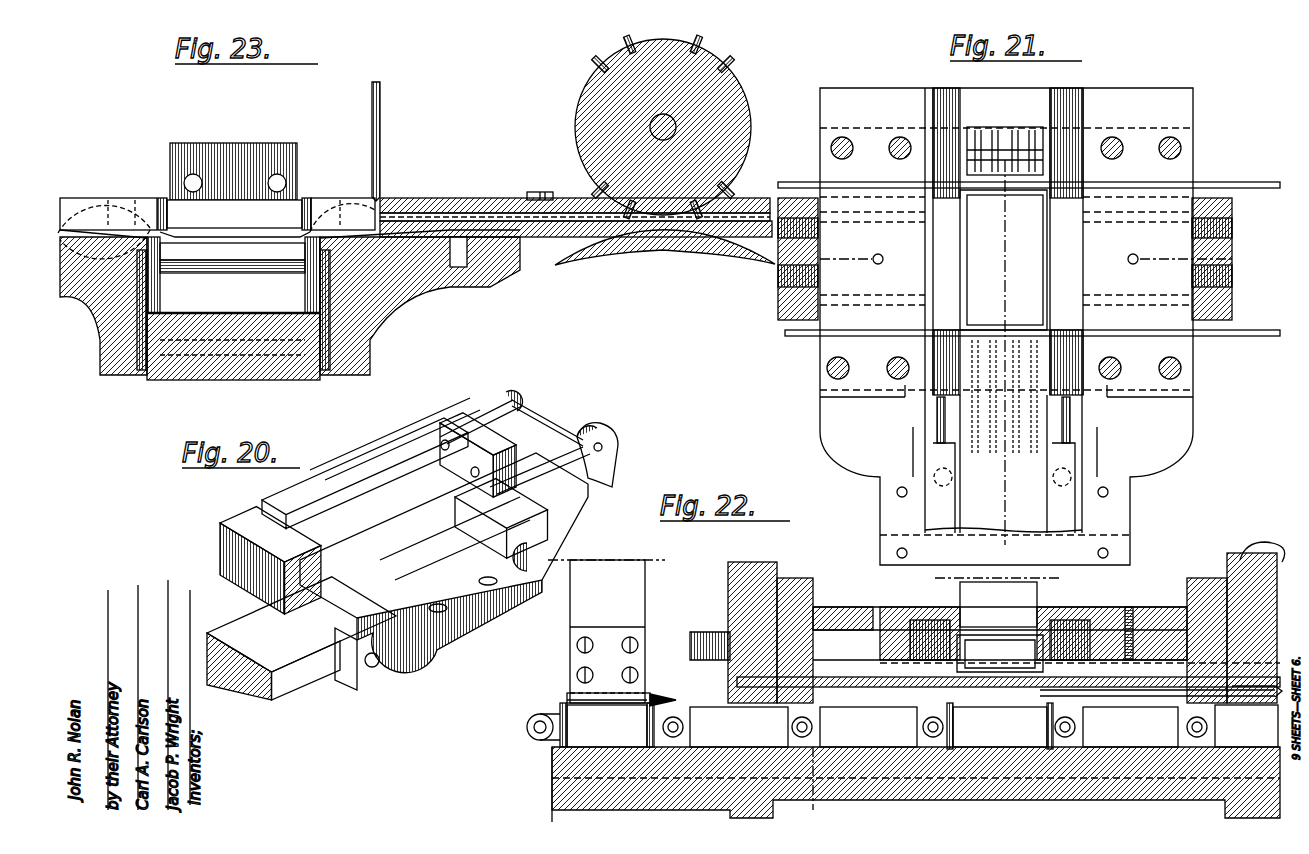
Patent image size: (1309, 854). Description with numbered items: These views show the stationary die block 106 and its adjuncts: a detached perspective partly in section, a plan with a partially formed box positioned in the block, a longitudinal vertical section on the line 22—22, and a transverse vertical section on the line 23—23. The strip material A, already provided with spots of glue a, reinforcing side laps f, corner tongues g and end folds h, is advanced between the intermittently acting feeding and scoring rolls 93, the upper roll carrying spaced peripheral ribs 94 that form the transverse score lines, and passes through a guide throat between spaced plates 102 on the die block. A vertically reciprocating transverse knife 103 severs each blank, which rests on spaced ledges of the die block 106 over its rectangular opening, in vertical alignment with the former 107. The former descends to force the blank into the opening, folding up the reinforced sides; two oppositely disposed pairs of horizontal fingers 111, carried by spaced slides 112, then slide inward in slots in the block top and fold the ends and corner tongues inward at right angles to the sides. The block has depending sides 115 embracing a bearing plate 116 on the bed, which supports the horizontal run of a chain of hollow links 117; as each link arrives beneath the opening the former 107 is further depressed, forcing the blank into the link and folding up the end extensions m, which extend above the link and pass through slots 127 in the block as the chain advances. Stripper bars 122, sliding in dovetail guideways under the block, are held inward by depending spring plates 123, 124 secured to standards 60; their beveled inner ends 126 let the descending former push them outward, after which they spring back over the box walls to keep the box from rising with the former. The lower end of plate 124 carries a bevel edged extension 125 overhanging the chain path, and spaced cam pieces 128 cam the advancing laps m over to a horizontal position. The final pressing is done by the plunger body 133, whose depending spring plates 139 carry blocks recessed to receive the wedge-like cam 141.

In FIG. 22, the standards 60 is at (770, 566).
In FIG. 23, the feeding and scoring rolls 93 is at (596, 95).
In FIG. 23, the peripheral ribs 94 is at (720, 70).
In FIG. 23, the spaced plates 102 is at (470, 226).
In FIG. 23, the transverse knife 103 is at (381, 92).
In FIG. 23, the die block 106 is at (229, 226).
In FIG. 21, the die block 106 is at (958, 240).
In FIG. 20, the die block 106 is at (386, 456).
In FIG. 22, the former 107 is at (998, 625).
In FIG. 23, the horizontal fingers 111 is at (153, 198).
In FIG. 21, the horizontal fingers 111 is at (790, 182).
In FIG. 22, the horizontal fingers 111 is at (697, 635).
In FIG. 20, the horizontal fingers 111 is at (545, 406).
In FIG. 20, the slides 112 is at (596, 428).
In FIG. 23, the depending sides 115 is at (371, 336).
In FIG. 20, the depending sides 115 is at (358, 684).
In FIG. 23, the bearing plate 116 is at (230, 373).
In FIG. 22, the bearing plate 116 is at (552, 766).
In FIG. 20, the bearing plate 116 is at (258, 690).
In FIG. 23, the chain of hollow links 117 is at (322, 300).
In FIG. 22, the chain of hollow links 117 is at (528, 731).
In FIG. 23, the stripper bars 122 is at (192, 258).
In FIG. 22, the stripper bars 122 is at (890, 695).
In FIG. 22, the spring-plate 123 is at (1255, 545).
In FIG. 22, the spring-plate 124 is at (728, 585).
In FIG. 22, the bevel edged extension 125 is at (678, 675).
In FIG. 23, the beveled portions 126 is at (240, 268).
In FIG. 21, the beveled portions 126 is at (858, 302).
In FIG. 22, the beveled portions 126 is at (965, 690).
In FIG. 23, the slots 127 is at (292, 255).
In FIG. 20, the slots 127 is at (360, 470).
In FIG. 22, the cam pieces 128 is at (676, 668).
In FIG. 22, the plunger body 133 is at (606, 631).
In FIG. 22, the spring plates 139 is at (580, 669).
In FIG. 22, the wedge-like cam 141 is at (567, 695).
In FIG. 21, the section line 22— 22 is at (1232, 253).
In FIG. 21, the section line 23— 23 is at (1035, 90).
In FIG. 21, the lines or spots of glue a is at (1006, 140).
In FIG. 21, the reinforcing side laps f is at (972, 282).
In FIG. 21, the corner tongues g is at (1041, 176).
In FIG. 22, the corner tongues g is at (566, 743).
In FIG. 23, the end folds h is at (234, 217).
In FIG. 21, the end folds h is at (1015, 265).
In FIG. 22, the end folds h is at (1044, 617).
In FIG. 23, the end extensions m is at (121, 200).
In FIG. 21, the end extensions m is at (1036, 126).
In FIG. 22, the end extensions m is at (869, 598).
In FIG. 23, the strip material A is at (426, 212).